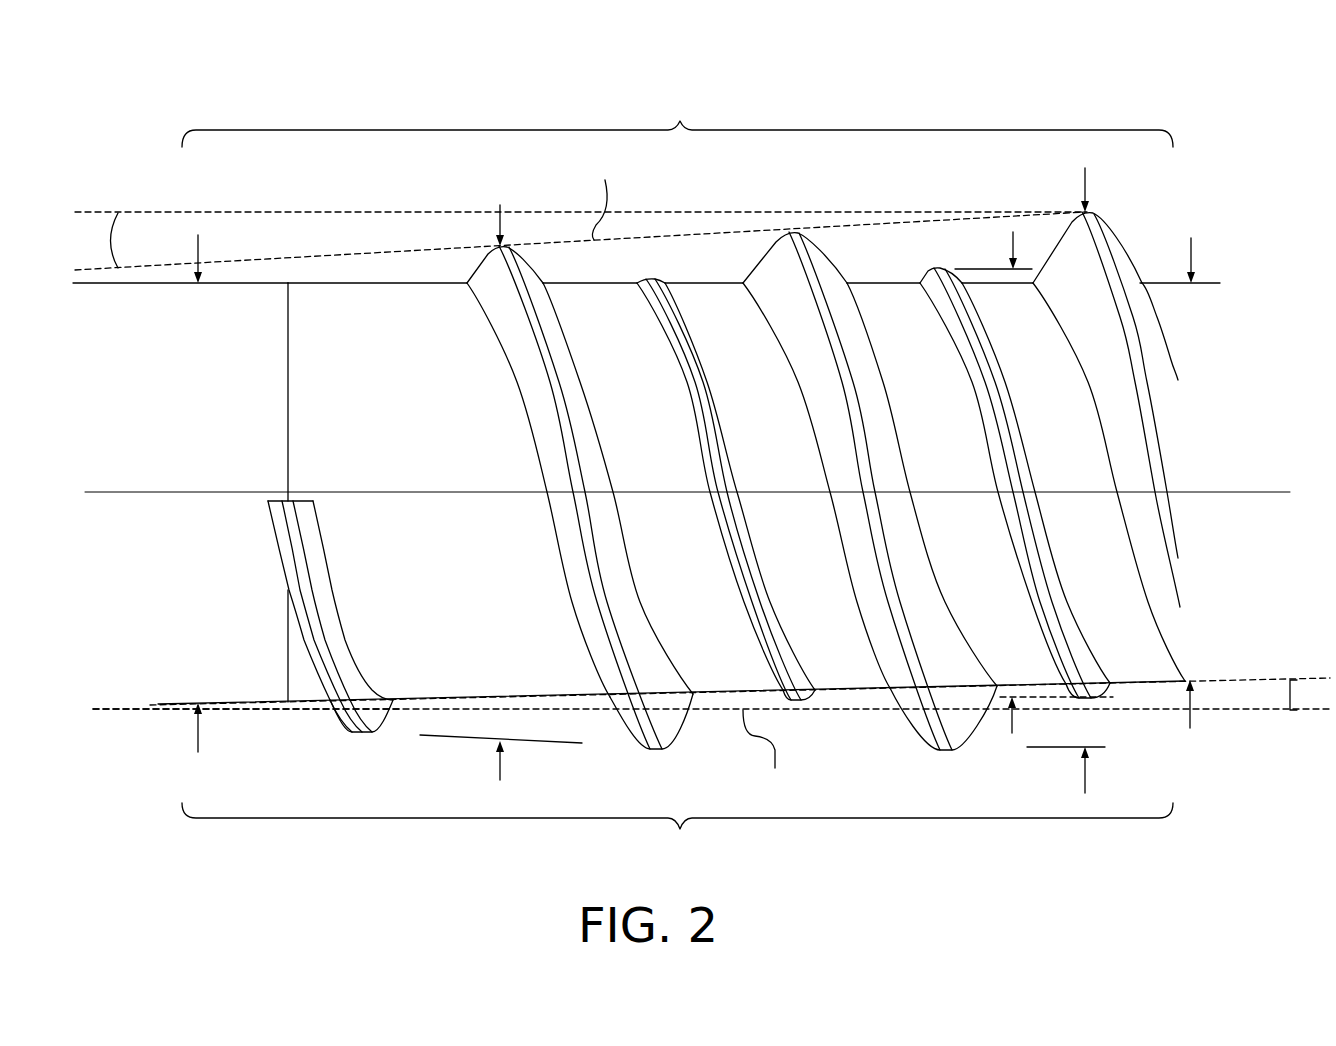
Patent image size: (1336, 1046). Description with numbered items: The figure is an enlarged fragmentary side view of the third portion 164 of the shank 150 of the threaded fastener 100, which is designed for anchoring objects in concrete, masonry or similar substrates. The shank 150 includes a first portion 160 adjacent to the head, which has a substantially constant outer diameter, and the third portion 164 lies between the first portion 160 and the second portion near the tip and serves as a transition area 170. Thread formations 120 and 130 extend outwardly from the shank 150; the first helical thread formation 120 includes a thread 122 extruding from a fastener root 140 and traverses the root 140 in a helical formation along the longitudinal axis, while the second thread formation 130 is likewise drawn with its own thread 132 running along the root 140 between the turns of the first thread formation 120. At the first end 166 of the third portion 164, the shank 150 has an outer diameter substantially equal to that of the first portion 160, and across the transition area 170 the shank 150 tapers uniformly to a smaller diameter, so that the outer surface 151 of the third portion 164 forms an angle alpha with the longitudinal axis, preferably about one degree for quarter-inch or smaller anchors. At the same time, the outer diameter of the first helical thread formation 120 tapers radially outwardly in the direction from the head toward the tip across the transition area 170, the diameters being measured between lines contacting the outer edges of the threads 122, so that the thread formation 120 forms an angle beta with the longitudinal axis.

The threaded fastener 100 is at (976, 98).
The first helical thread formation 120 is at (1150, 423).
The thread 122 is at (1152, 437).
The thread formation 130 is at (1088, 483).
The crest of second thread 132 is at (1052, 588).
The fastener root 140 is at (888, 325).
The shank 150 is at (358, 425).
The outer surface 151 is at (301, 283).
The first portion 160 is at (1211, 283).
The third portion 164 is at (677, 834).
The first end of the third portion 166 is at (218, 708).
The transition area 170 is at (677, 116).